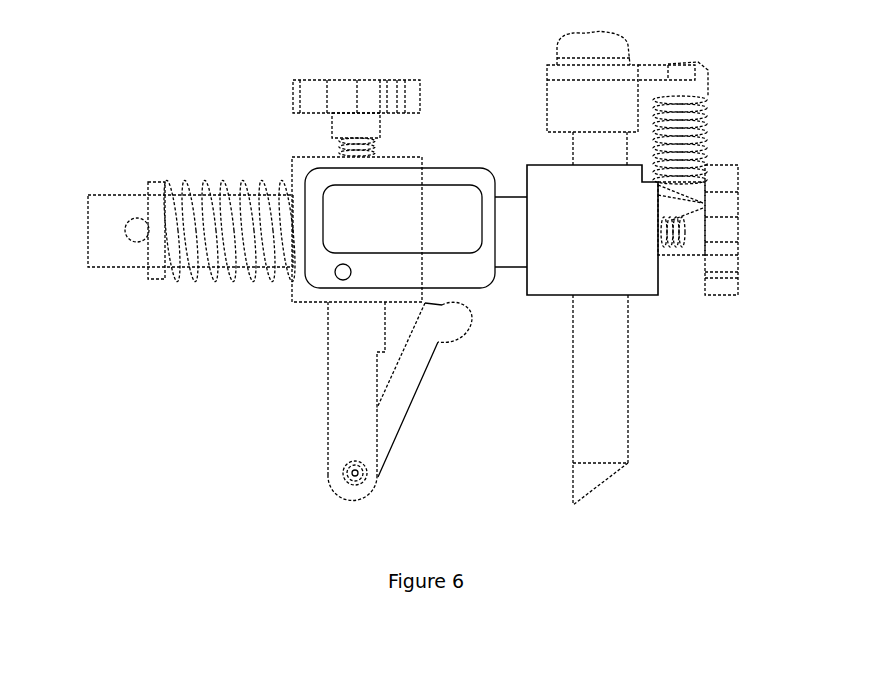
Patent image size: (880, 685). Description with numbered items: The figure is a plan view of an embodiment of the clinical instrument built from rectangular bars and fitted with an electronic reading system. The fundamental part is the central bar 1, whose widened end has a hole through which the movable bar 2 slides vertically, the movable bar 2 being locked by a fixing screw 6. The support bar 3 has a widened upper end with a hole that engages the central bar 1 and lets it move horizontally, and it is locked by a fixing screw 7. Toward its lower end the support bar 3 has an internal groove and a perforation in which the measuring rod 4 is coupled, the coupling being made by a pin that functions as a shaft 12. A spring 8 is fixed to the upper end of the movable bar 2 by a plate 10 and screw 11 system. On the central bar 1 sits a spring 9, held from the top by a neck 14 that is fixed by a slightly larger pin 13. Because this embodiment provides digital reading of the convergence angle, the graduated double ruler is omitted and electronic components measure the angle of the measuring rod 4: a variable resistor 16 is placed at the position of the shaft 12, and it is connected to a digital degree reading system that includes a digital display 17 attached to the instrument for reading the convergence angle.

The central bar 1 is at (108, 208).
The movable bar 2 is at (612, 360).
The support bar 3 is at (342, 393).
The measuring rod 4 is at (418, 370).
The fixing screw 6 is at (735, 228).
The fixing screw 7 is at (349, 85).
The spring 8 is at (707, 118).
The spring 9 is at (227, 183).
The plate 10 is at (563, 78).
The screw 11 is at (610, 48).
The shaft 12 is at (350, 475).
The pin 13 is at (137, 232).
The neck 14 is at (160, 193).
The variable resistor 16 is at (316, 482).
The digital display 17 is at (423, 190).